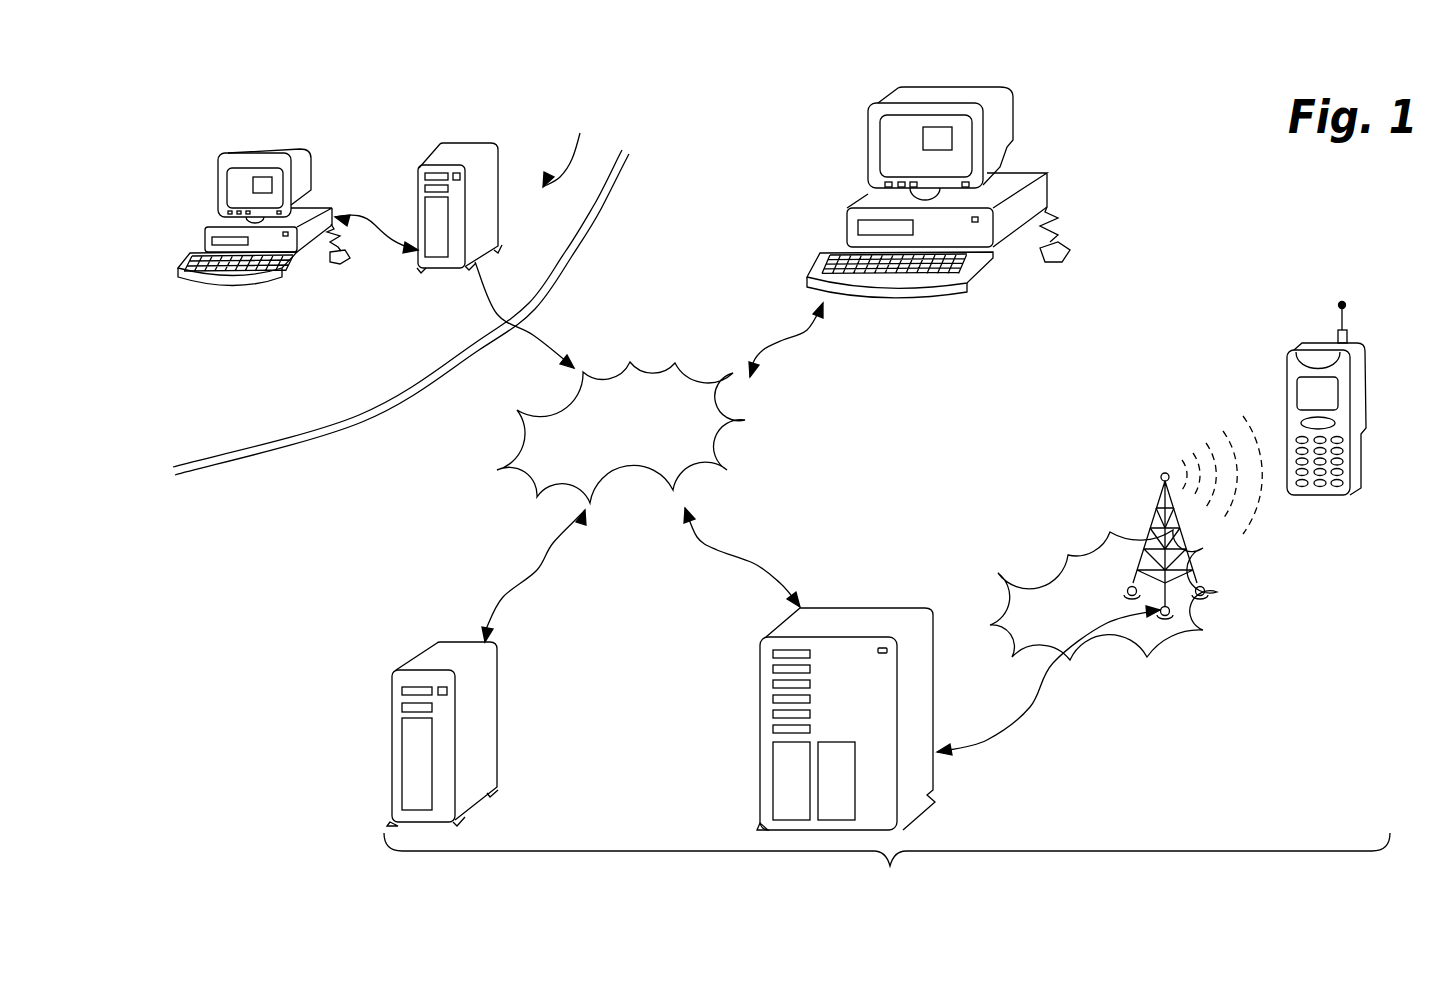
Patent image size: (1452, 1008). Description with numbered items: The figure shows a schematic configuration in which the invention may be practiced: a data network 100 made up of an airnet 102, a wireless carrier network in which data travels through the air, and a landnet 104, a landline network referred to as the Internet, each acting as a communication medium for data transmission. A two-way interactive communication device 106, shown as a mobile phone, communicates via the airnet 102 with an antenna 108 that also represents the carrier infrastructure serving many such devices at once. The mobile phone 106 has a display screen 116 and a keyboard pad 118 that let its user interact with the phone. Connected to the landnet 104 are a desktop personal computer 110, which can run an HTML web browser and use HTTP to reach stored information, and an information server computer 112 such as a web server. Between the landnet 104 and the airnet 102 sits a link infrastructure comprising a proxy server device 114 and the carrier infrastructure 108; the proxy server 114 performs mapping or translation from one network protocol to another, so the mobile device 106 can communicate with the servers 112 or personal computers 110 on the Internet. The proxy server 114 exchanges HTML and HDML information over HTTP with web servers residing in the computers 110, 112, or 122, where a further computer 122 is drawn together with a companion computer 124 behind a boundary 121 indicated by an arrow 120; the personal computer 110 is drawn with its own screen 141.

The data network 100 is at (887, 865).
The airnet 102 is at (1037, 548).
The landnet 104 is at (750, 437).
The two-way interactive communication device 106 is at (1369, 382).
The antenna 108 is at (1157, 493).
The desktop personal computer 110 is at (962, 179).
The information server computer 112 is at (487, 737).
The proxy server device 114 is at (853, 612).
The display screen 116 is at (1325, 395).
The keyboard pad 118 is at (1318, 450).
The private network 120 is at (572, 143).
The firewall 121 is at (622, 150).
The computer 122 is at (443, 157).
The private network computer 124 is at (222, 170).
The display screen 141 is at (952, 120).